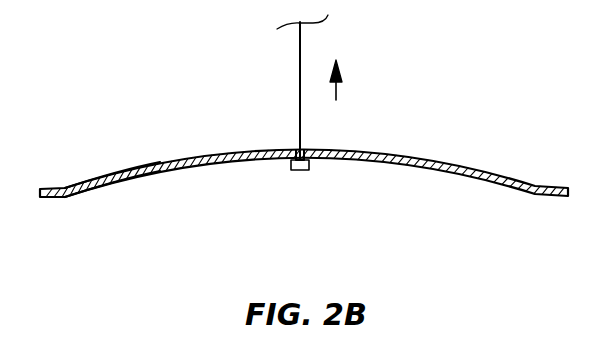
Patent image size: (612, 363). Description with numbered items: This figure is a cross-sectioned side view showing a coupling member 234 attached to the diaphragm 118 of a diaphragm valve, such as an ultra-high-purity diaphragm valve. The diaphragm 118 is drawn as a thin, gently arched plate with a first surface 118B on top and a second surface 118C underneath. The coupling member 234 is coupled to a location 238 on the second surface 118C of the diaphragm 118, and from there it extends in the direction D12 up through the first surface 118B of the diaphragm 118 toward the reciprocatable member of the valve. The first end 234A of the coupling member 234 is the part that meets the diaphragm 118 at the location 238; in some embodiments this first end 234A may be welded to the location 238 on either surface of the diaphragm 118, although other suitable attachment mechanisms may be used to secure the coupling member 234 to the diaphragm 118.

The diaphragm 118 is at (468, 169).
The first surface of the diaphragm 118B is at (113, 178).
The second surface of the diaphragm 118C is at (134, 188).
The coupling member 234 is at (300, 80).
The first end of the coupling member 234A is at (312, 170).
The location 238 is at (292, 160).
The direction D12 is at (336, 88).